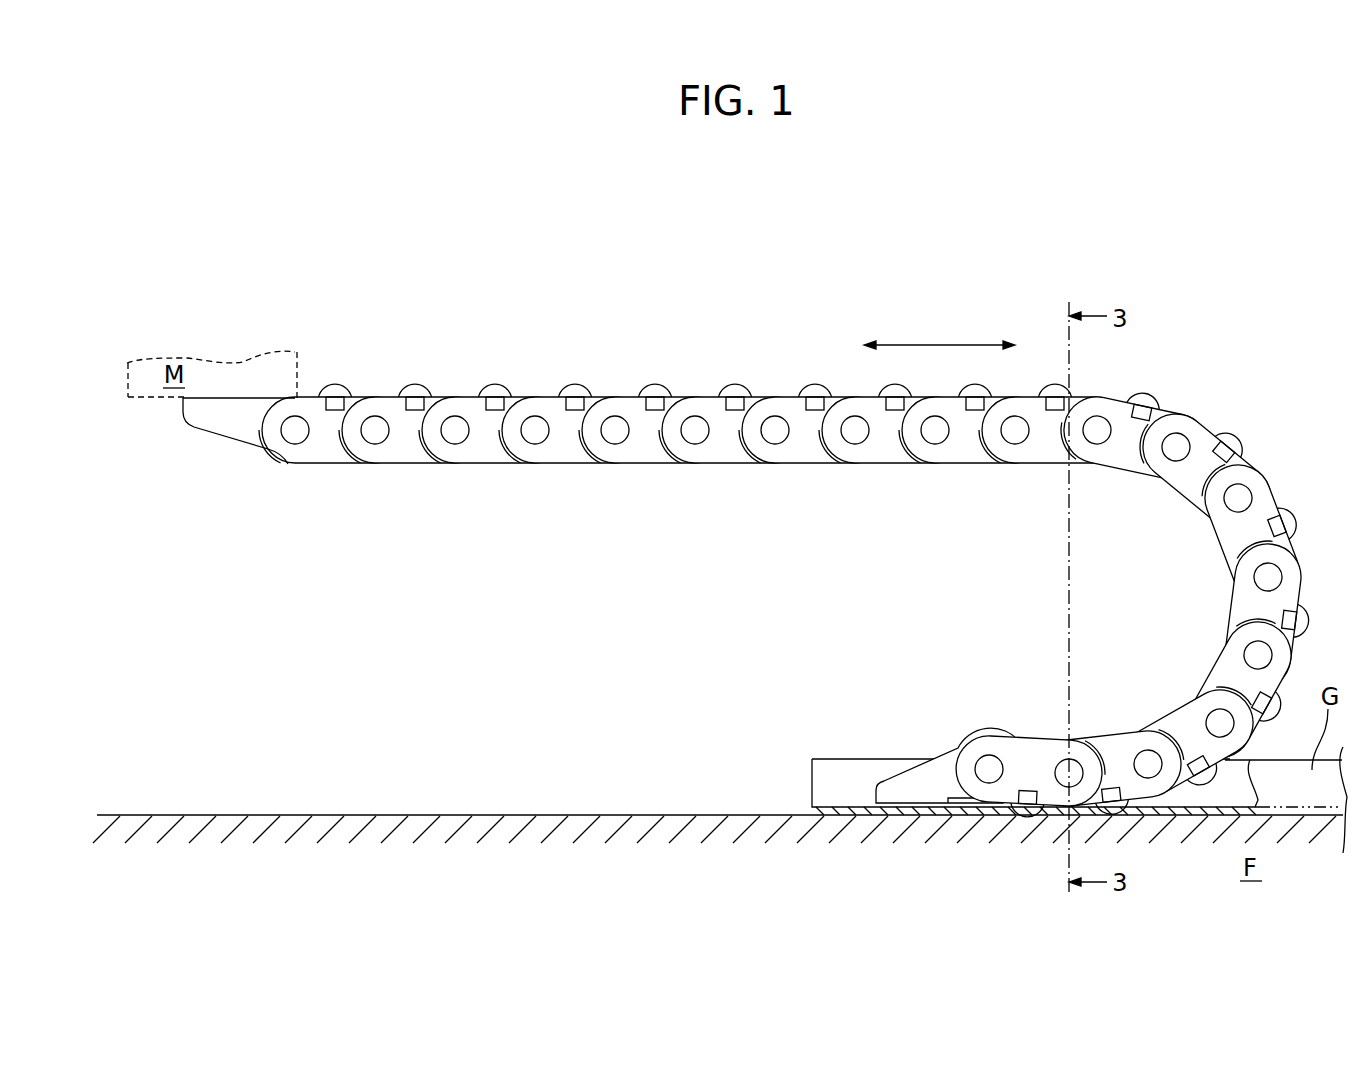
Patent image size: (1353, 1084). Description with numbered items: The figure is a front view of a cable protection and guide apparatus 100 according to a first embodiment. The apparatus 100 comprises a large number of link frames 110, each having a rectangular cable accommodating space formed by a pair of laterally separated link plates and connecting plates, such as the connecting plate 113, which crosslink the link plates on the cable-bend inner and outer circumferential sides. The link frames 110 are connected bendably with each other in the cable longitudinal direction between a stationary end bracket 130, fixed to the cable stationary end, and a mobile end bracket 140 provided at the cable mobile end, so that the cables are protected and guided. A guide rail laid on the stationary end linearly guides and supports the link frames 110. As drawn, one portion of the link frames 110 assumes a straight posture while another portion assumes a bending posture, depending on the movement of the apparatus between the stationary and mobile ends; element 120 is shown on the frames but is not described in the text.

The cable protection and guide apparatus 100 is at (724, 249).
The link frame 110 is at (487, 452).
The connecting plate 113 is at (479, 403).
The rolling member 120 is at (504, 388).
The stationary end bracket 130 is at (962, 767).
The mobile end bracket 140 is at (213, 417).